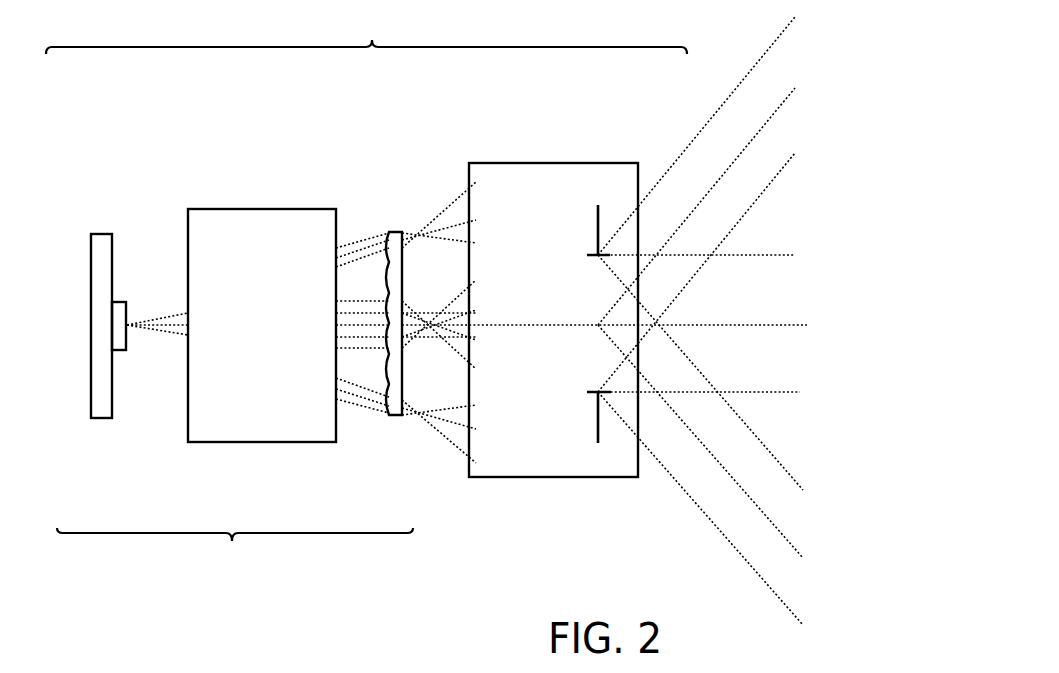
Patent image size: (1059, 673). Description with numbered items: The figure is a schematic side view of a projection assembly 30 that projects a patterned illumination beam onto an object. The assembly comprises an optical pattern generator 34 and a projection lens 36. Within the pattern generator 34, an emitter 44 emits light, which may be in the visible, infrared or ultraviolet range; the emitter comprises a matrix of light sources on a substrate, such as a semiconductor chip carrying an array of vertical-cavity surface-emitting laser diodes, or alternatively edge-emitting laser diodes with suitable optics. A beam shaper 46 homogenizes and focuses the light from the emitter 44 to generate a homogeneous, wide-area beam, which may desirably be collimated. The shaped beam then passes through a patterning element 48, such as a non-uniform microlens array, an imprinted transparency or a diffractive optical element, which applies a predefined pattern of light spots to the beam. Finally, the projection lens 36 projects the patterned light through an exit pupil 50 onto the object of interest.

The projection assembly 30 is at (366, 33).
The optical pattern generator 34 is at (235, 552).
The projection lens 36 is at (578, 477).
The emitter 44 is at (122, 301).
The beam shaper 46 is at (262, 209).
The patterning element 48 is at (396, 232).
The exit pupil 50 is at (588, 255).